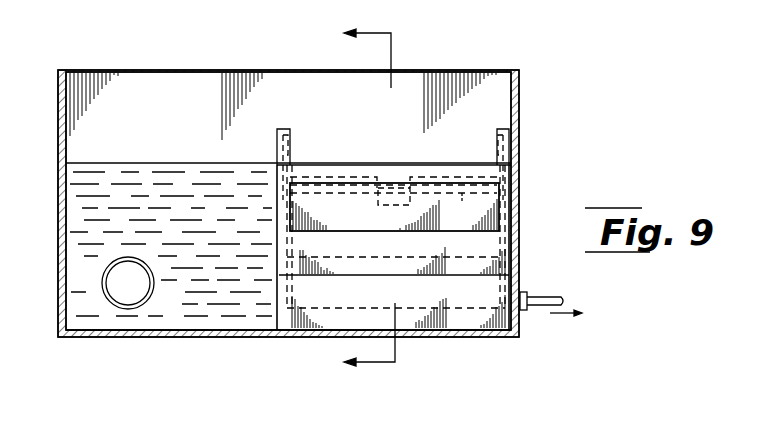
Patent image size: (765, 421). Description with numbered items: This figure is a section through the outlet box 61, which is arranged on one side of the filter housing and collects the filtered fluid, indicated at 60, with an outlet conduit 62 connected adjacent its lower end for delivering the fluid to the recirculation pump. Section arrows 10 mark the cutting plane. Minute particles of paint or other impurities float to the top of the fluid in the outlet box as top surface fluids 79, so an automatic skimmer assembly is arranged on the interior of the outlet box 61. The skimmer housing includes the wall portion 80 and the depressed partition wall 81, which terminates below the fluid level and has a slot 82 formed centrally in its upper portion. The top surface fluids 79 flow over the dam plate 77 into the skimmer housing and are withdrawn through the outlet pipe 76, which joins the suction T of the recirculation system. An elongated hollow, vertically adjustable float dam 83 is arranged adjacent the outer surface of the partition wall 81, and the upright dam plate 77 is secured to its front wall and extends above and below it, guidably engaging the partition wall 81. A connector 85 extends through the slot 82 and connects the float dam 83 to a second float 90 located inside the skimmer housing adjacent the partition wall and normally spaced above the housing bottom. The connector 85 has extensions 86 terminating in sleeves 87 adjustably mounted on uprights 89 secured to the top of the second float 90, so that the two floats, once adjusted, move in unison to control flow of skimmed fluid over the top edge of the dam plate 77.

The section line 10 is at (369, 202).
The collected fluid 60 is at (66, 204).
The outlet box 61 is at (64, 238).
The outlet conduit 62 is at (102, 290).
The outlet pipe 76 is at (539, 297).
The dam plate 77 is at (378, 170).
The top surface fluids 79 is at (204, 162).
The wall portion 80 is at (284, 129).
The partition wall 81 is at (358, 169).
The slot 82 is at (405, 178).
The float dam 83 is at (499, 218).
The connector 85 is at (383, 206).
The extensions 86 is at (460, 200).
The sleeves 87 is at (518, 161).
The uprights 89 is at (288, 142).
The second float 90 is at (468, 334).